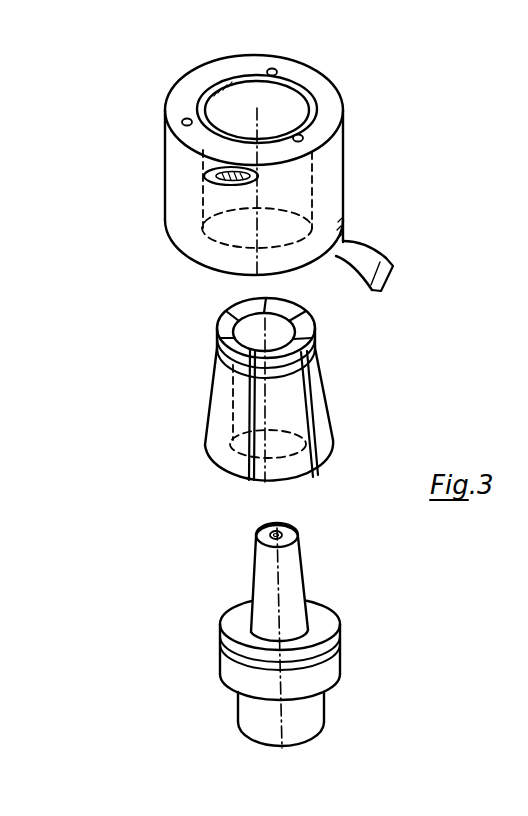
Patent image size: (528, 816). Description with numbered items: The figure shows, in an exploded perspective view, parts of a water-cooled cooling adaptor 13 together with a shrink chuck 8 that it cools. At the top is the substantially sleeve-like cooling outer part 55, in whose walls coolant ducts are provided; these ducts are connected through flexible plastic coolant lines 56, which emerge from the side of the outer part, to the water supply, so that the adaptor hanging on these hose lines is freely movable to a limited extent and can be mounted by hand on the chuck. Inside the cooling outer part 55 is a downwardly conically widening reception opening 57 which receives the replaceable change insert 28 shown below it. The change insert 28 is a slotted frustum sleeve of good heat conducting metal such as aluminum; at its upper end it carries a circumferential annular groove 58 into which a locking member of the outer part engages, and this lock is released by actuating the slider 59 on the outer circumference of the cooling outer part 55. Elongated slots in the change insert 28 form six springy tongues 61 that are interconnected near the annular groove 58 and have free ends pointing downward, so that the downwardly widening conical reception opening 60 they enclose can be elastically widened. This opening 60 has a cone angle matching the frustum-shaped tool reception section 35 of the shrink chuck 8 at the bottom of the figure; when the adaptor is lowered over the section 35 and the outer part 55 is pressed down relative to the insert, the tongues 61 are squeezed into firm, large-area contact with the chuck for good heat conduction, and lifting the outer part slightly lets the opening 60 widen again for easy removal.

The shrink chuck 8 is at (367, 642).
The cooling adaptor 13 is at (130, 287).
The change insert 28 is at (357, 382).
The tool reception section 35 is at (298, 576).
The cooling outer part 55 is at (346, 163).
The coolant lines 56 is at (390, 258).
The reception opening 57 is at (291, 111).
The annular groove 58 is at (317, 349).
The slider 59 is at (215, 181).
The reception opening 60 is at (293, 462).
The springy tongues 61 is at (219, 415).